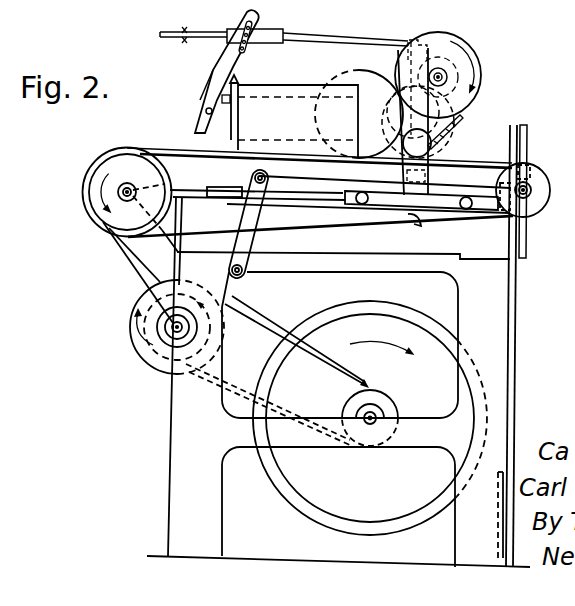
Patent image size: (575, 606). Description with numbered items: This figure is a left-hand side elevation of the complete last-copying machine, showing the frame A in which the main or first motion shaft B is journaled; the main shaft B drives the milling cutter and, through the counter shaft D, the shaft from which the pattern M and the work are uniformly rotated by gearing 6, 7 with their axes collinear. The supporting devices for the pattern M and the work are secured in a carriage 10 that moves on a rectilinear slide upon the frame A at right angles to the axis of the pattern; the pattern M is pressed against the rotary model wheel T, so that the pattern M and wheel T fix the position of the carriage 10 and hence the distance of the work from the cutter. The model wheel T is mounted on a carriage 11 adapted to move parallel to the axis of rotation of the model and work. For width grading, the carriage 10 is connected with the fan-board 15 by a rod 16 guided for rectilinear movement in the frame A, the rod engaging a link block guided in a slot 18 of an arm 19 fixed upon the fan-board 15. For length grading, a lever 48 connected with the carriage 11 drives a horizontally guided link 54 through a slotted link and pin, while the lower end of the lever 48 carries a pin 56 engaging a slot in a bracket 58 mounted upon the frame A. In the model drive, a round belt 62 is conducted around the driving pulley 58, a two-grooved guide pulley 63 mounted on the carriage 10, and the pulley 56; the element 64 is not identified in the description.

The gearing 6 is at (440, 108).
The gearing 7 is at (438, 68).
The carriage 10 is at (428, 172).
The carriage 11 is at (248, 163).
The fan-board 15 is at (205, 113).
The rod 16 is at (316, 38).
The slot 18 is at (250, 20).
The arm 19 is at (226, 64).
The lever 48 is at (513, 371).
The link 54 is at (527, 243).
The pin 56 is at (482, 70).
The bracket 58 is at (96, 205).
The round belt 62 is at (458, 120).
The guide pulley 63 is at (395, 157).
The roller 64 is at (550, 191).
The frame A is at (316, 368).
The main shaft B is at (380, 410).
The counter shaft D is at (170, 335).
The pattern M is at (452, 143).
The model wheel T is at (384, 72).